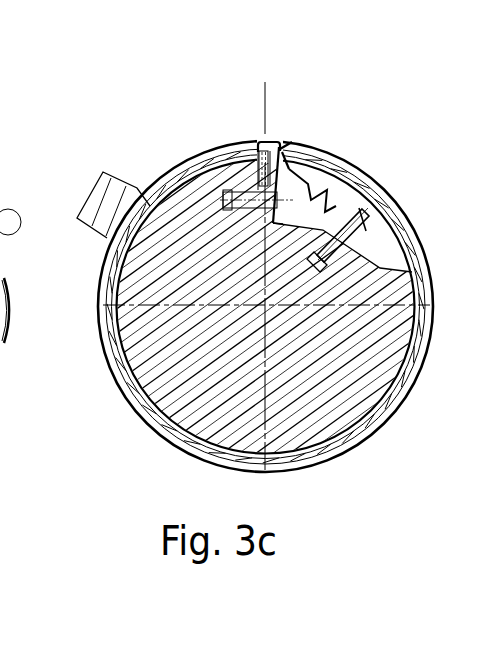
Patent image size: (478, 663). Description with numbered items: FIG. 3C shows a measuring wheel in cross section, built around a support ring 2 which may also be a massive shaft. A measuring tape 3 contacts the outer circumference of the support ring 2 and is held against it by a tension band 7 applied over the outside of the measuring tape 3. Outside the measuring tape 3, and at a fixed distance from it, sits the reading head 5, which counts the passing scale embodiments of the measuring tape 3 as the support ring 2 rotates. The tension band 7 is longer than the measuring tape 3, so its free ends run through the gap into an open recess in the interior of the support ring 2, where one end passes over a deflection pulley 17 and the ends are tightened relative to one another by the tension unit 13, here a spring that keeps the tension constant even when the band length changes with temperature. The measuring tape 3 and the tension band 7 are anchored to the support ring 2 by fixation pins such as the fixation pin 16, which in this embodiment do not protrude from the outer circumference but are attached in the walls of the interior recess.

The support ring 2 is at (140, 195).
The measuring tape 3 is at (157, 175).
The reading head 5 is at (80, 195).
The tension band 7 is at (175, 163).
The tension unit 13 is at (310, 188).
The fixation pin 16 is at (255, 137).
The deflection pulley 17 is at (363, 213).